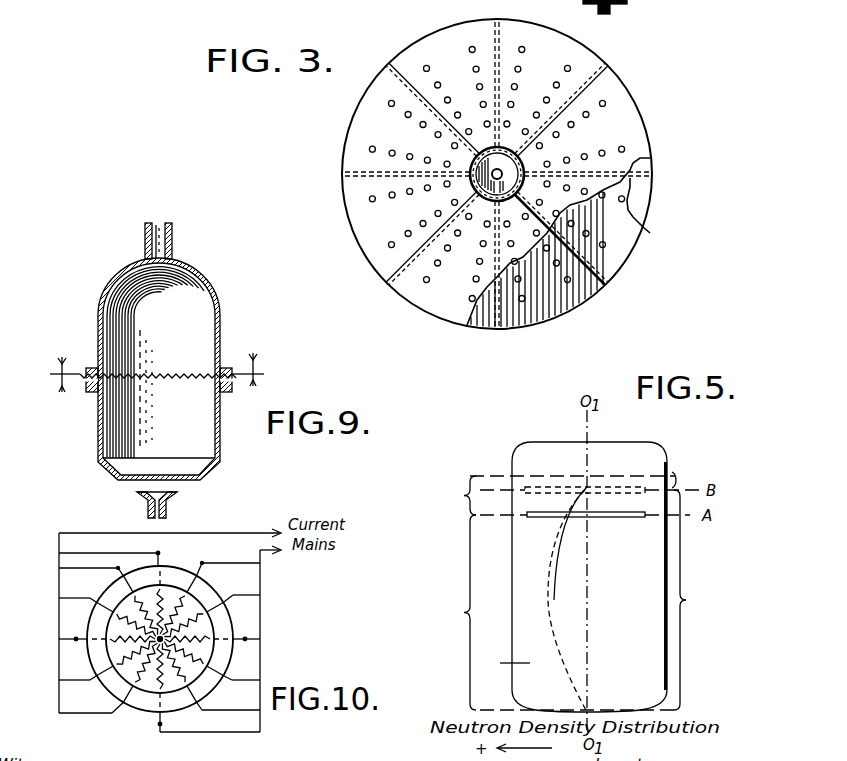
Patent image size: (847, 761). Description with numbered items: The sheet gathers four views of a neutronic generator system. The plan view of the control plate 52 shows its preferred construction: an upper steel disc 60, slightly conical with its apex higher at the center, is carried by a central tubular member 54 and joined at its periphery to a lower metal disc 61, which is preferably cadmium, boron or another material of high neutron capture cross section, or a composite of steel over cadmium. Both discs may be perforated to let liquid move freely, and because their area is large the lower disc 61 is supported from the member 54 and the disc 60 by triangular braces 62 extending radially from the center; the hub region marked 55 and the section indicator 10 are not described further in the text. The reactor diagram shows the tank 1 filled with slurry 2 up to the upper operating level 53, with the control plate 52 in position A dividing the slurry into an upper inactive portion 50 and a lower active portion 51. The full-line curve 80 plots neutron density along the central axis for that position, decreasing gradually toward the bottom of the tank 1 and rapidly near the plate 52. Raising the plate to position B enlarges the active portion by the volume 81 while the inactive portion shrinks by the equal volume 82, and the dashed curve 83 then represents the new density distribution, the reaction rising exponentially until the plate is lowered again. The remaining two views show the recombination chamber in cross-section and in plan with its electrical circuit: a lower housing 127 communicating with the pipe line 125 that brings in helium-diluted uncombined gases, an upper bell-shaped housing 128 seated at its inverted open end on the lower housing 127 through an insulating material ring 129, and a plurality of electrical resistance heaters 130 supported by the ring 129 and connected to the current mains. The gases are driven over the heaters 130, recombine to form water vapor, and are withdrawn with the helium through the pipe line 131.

In FIG. 3, the tubular member 54 is at (525, 159).
In FIG. 3, the central hub 55 is at (477, 186).
In FIG. 3, the upper steel disc 60 is at (377, 249).
In FIG. 3, the lower metal disc 61 is at (547, 312).
In FIG. 3, the triangular braces 62 is at (643, 229).
In FIG. 9, the pipe line 131 is at (145, 236).
In FIG. 9, the upper bell-shaped housing 128 is at (98, 312).
In FIG. 9, the lower housing 127 is at (98, 424).
In FIG. 9, the heaters 130 is at (167, 376).
In FIG. 10, the heaters 130 is at (200, 627).
In FIG. 9, the insulating material ring 129 is at (233, 379).
In FIG. 10, the insulating material ring 129 is at (147, 700).
In FIG. 9, the section line 10- 10 is at (153, 372).
In FIG. 9, the pipe line 125 is at (146, 507).
In FIG. 5, the tank 1 is at (535, 446).
In FIG. 5, the slurry 2 is at (508, 664).
In FIG. 5, the upper operating level 53 is at (540, 474).
In FIG. 5, the control plate 52 is at (527, 518).
In FIG. 5, the upper inactive portion 50 is at (458, 495).
In FIG. 5, the lower active portion 51 is at (457, 612).
In FIG. 5, the active portion increase 81 is at (691, 600).
In FIG. 5, the inactive portion decrease 82 is at (678, 480).
In FIG. 5, the neutron density curve 80 is at (560, 565).
In FIG. 5, the dashed line curve 83 is at (553, 560).